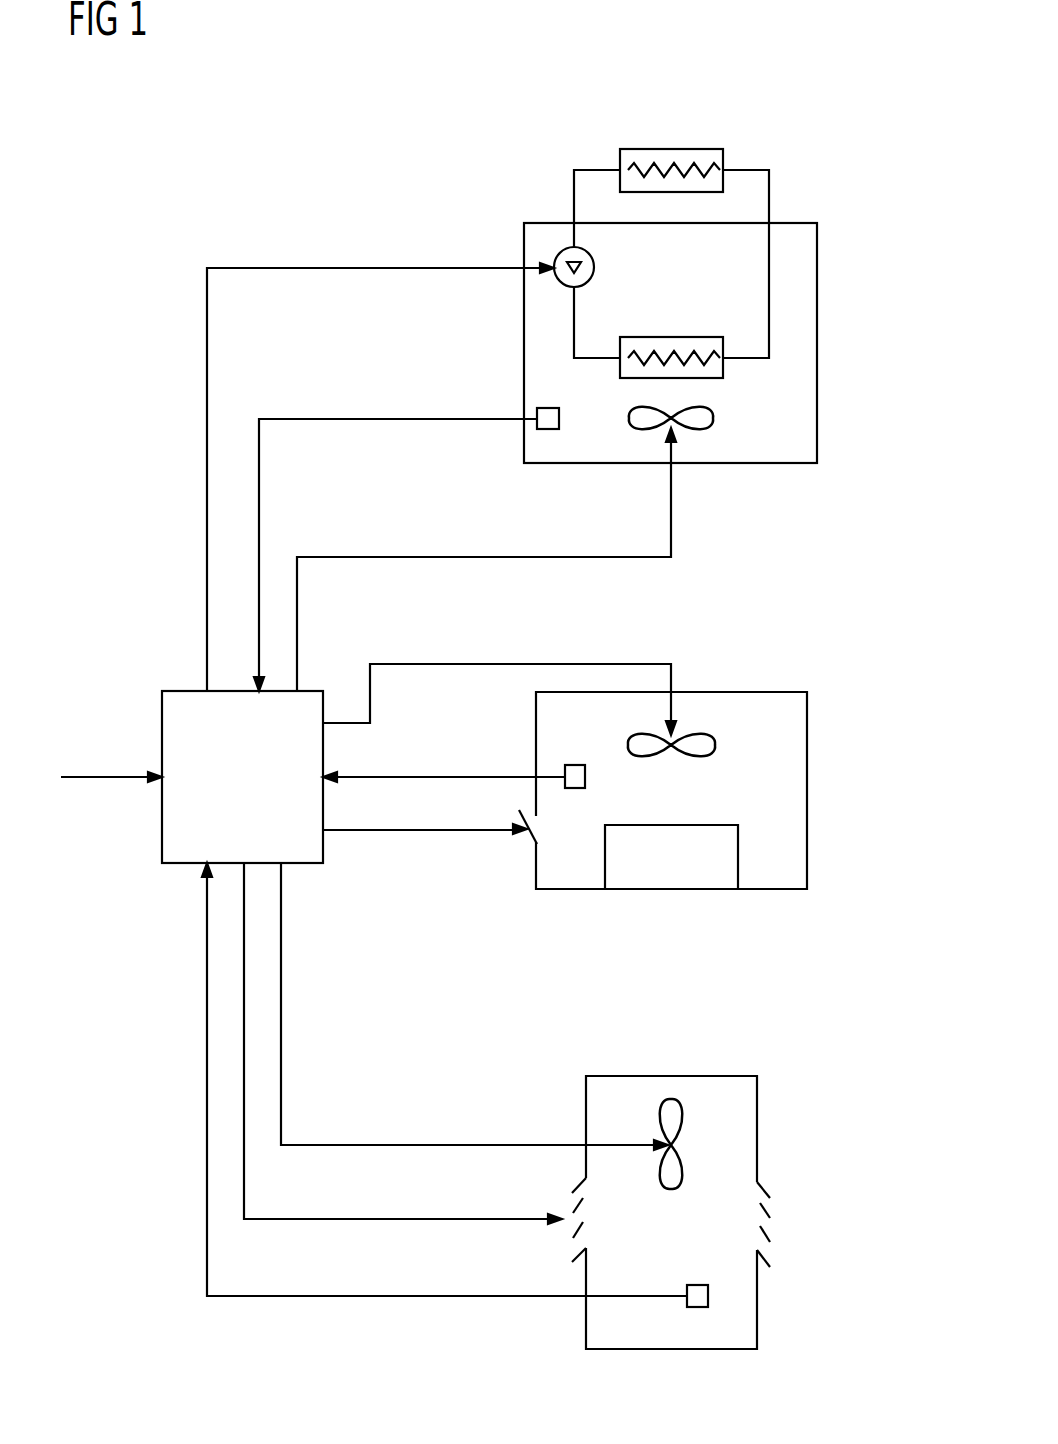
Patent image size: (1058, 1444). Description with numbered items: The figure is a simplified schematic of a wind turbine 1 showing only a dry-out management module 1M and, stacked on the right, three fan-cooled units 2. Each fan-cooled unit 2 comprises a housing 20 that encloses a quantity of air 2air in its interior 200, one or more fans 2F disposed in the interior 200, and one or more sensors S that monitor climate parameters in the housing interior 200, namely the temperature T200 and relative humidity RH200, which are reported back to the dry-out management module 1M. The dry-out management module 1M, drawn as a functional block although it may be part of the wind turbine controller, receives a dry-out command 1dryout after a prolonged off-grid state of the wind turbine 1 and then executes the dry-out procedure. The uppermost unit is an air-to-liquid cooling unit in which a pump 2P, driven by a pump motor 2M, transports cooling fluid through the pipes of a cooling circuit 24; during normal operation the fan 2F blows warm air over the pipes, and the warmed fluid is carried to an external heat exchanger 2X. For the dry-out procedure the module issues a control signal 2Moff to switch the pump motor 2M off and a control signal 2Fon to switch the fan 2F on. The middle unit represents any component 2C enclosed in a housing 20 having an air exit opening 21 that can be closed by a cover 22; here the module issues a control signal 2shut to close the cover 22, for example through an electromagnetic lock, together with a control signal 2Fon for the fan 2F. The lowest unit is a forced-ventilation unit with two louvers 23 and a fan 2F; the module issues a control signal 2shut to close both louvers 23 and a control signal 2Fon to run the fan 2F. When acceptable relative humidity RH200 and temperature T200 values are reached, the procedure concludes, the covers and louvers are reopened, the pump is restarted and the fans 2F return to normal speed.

The wind turbine 1 is at (162, 115).
The dry-out management module 1M is at (162, 836).
The dry-out command 1dryout is at (110, 775).
The fan-cooled unit 2 is at (864, 147).
The housing 20 is at (793, 222).
The interior 200 is at (813, 267).
The external heat exchanger 2X is at (671, 149).
The cooling circuit 24 is at (574, 203).
The pump motor 2M is at (629, 263).
The pump 2P is at (594, 267).
The control signal 2Moff is at (365, 267).
The sensor S is at (559, 418).
The temperature T200 is at (444, 897).
The relative humidity RH200 is at (395, 1330).
The fan 2F is at (713, 418).
The control signal 2Fon is at (671, 510).
The air 2air is at (802, 378).
The air exit opening 21 is at (561, 822).
The cover 22 is at (530, 843).
The control signal 2shut is at (402, 1217).
The louver 23 is at (577, 1178).
The component 2C is at (670, 890).